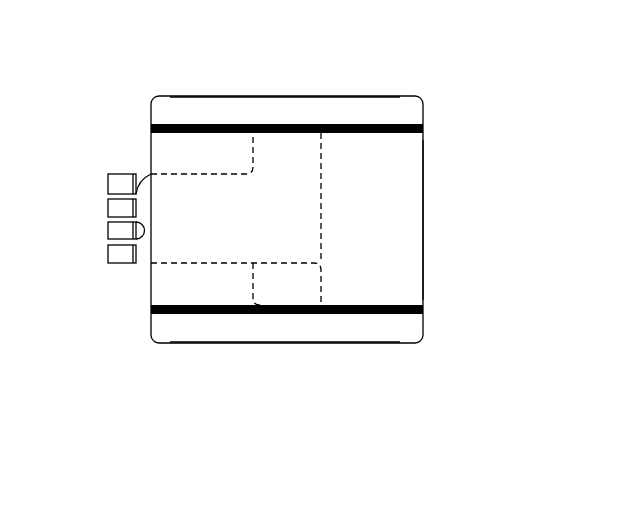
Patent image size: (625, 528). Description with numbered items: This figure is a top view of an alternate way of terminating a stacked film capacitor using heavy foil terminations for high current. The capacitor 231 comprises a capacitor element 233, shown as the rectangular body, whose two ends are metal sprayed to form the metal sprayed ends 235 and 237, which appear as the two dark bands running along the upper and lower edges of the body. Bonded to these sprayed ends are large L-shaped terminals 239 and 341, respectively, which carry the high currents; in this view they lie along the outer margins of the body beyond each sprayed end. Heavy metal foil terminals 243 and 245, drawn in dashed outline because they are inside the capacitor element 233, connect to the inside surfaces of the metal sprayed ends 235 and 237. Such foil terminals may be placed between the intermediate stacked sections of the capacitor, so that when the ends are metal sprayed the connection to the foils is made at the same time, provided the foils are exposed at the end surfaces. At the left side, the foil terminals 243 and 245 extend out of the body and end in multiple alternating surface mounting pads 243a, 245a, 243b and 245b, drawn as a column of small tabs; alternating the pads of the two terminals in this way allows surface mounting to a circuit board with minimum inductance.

The capacitor 231 is at (190, 88).
The L-shaped terminal 239 is at (274, 86).
The metal sprayed end 235 is at (432, 123).
The metal sprayed end 237 is at (438, 309).
The capacitor element 233 is at (437, 215).
The L-shaped terminal 341 is at (299, 352).
The heavy metal foil terminal 243 is at (160, 192).
The surface mounting pad 243a is at (103, 176).
The surface mounting pad 243b is at (105, 238).
The heavy metal foil terminal 245 is at (161, 348).
The surface mounting pad 245a is at (97, 199).
The surface mounting pad 245b is at (145, 270).